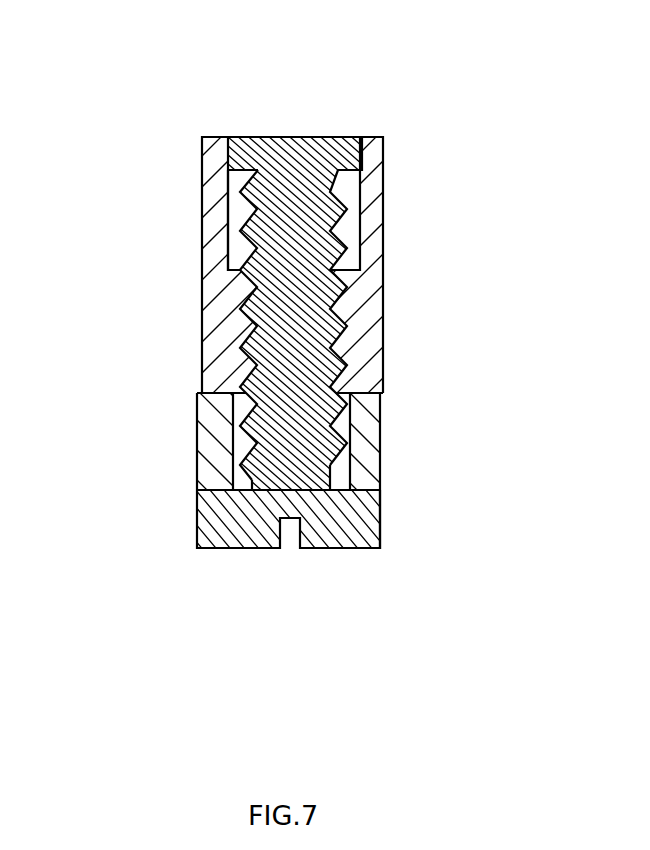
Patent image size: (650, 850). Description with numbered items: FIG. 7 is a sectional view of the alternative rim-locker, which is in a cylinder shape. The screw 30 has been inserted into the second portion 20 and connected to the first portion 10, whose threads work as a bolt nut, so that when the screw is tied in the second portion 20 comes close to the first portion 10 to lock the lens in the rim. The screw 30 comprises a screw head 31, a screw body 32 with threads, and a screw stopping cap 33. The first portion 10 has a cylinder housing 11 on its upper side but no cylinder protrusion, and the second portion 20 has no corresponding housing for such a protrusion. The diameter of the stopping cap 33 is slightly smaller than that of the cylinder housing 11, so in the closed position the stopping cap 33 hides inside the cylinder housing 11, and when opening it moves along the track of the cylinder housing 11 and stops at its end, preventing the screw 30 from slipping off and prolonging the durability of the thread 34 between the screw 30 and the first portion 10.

The first portion 10 is at (212, 262).
The cylinder housing 11 is at (238, 200).
The second portion 20 is at (213, 428).
The screw 30 is at (207, 523).
The screw head 31 is at (348, 518).
The screw body 32 is at (307, 380).
The stopping cap 33 is at (272, 155).
The thread 34 is at (343, 302).